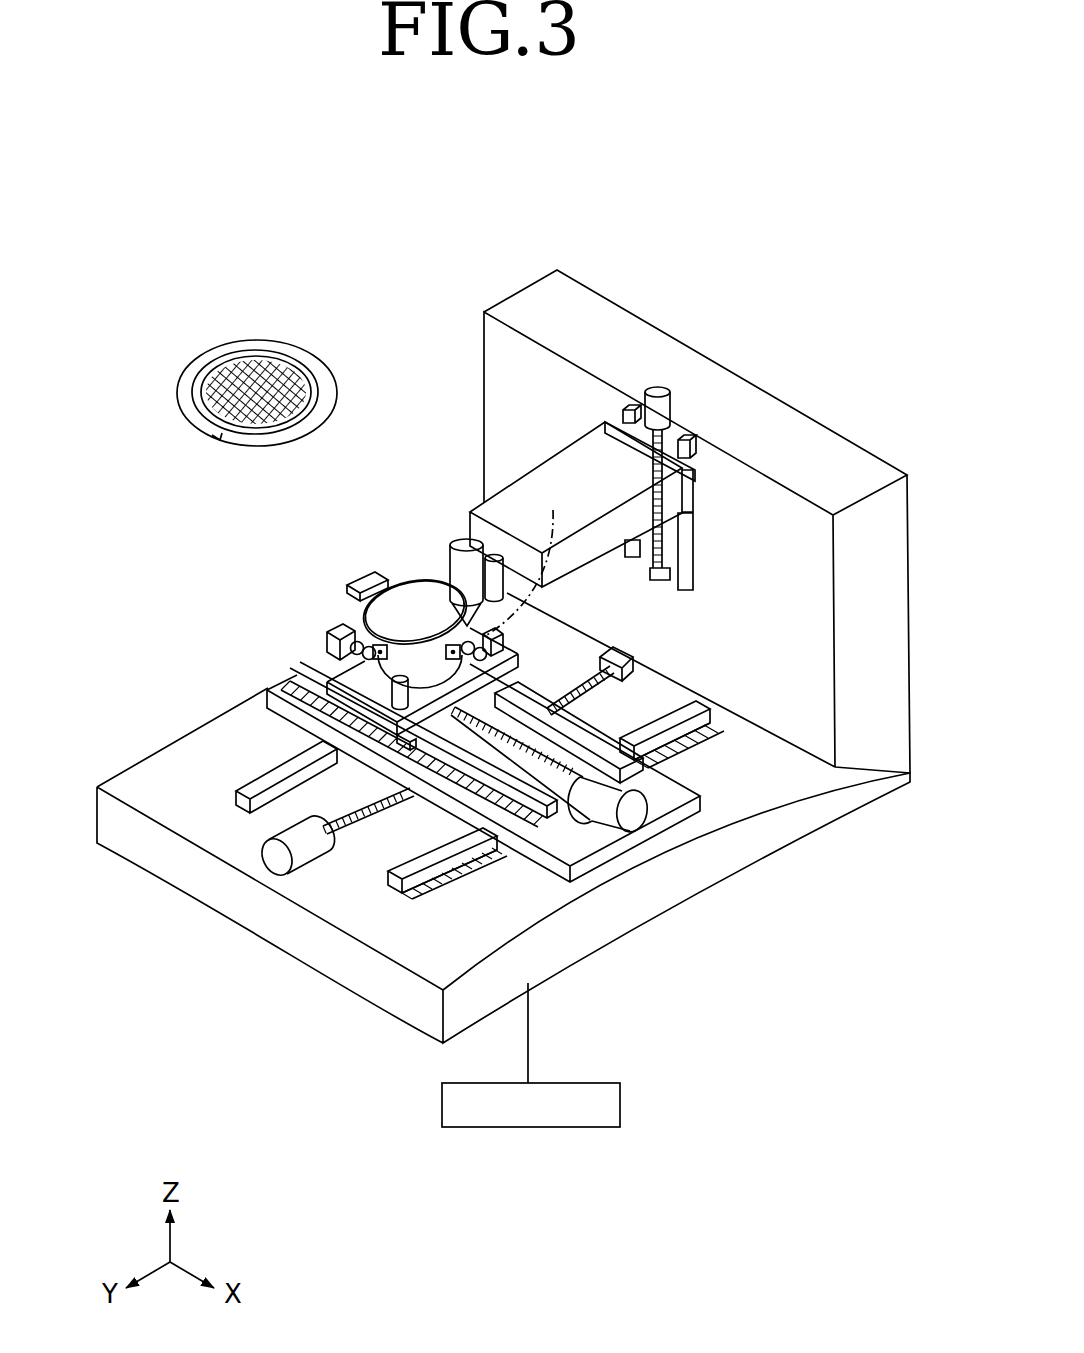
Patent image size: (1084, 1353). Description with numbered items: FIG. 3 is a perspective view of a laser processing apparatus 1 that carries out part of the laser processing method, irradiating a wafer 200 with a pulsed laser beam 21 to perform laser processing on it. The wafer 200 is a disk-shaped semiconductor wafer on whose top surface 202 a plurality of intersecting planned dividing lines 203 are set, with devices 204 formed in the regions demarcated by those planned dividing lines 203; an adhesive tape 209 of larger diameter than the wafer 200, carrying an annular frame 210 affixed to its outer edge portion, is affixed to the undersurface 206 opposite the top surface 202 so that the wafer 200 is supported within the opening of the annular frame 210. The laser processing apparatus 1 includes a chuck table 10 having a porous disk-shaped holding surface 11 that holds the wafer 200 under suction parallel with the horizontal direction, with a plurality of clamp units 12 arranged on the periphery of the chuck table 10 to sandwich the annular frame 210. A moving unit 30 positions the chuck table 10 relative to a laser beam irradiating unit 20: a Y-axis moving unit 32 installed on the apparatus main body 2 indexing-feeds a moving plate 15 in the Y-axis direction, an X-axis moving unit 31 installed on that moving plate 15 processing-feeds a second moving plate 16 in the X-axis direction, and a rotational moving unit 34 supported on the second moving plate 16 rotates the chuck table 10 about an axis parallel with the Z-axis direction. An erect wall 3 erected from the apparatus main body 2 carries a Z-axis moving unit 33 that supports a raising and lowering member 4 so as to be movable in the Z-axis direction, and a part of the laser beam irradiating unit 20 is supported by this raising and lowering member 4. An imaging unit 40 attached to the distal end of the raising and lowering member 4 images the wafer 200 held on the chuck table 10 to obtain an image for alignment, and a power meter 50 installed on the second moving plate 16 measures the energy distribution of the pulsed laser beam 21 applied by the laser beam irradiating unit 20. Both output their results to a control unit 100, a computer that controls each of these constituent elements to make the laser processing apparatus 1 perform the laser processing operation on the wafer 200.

The laser processing apparatus 1 is at (470, 222).
The apparatus main body 2 is at (610, 923).
The erect wall 3 is at (868, 545).
The raising and lowering member 4 is at (582, 468).
The chuck table 10 is at (406, 576).
The holding surface 11 is at (428, 597).
The clamp units 12 is at (340, 632).
The moving plate 15 is at (617, 857).
The second moving plate 16 is at (268, 690).
The laser beam irradiating unit 20 is at (460, 538).
The pulsed laser beam 21 is at (556, 507).
The moving unit 30 is at (197, 1058).
The X-axis moving unit 31 is at (553, 840).
The Y-axis moving unit 32 is at (360, 853).
The Z-axis moving unit 33 is at (633, 586).
The rotational moving unit 34 is at (427, 672).
The imaging unit 40 is at (493, 573).
The power meter 50 is at (332, 640).
The control unit 100 is at (622, 1098).
The wafer 200 is at (214, 370).
The top surface 202 is at (297, 377).
The planned dividing lines 203 is at (289, 357).
The devices 204 is at (261, 412).
The undersurface 206 is at (217, 438).
The adhesive tape 209 is at (297, 423).
The annular frame 210 is at (177, 393).